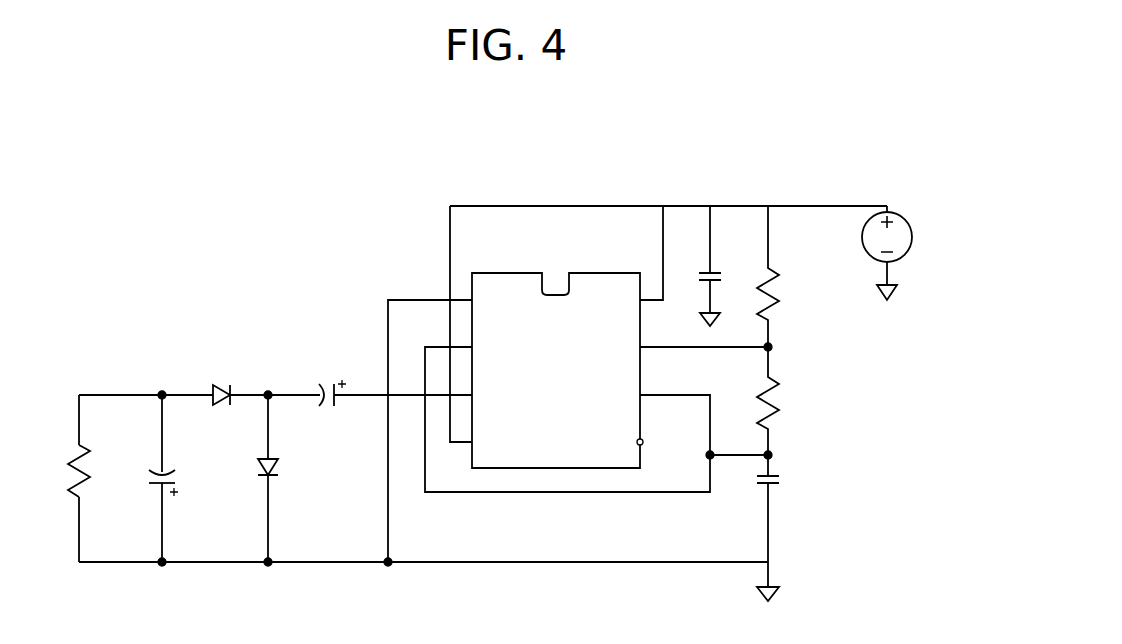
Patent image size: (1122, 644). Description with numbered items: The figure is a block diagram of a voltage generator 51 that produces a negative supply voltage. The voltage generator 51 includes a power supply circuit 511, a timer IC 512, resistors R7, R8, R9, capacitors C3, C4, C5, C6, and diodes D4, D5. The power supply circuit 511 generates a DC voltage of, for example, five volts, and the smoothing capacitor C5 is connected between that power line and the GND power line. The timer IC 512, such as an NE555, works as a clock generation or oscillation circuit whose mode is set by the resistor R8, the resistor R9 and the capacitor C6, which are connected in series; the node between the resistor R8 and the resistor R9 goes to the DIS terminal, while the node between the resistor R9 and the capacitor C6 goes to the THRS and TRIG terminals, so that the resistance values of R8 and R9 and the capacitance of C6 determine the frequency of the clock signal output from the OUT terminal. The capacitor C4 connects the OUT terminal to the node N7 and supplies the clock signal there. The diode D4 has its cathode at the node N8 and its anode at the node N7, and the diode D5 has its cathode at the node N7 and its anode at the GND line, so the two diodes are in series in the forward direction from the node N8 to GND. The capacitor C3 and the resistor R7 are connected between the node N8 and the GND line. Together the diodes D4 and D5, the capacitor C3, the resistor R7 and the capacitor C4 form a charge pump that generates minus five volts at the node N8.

The voltage generator 51 is at (394, 206).
The power supply circuit 511 is at (905, 218).
The timer IC 512 is at (594, 273).
The resistor R7 is at (70, 469).
The resistor R8 is at (778, 300).
The resistor R9 is at (777, 404).
The capacitor C3 is at (165, 474).
The capacitor C4 is at (326, 385).
The capacitor C5 is at (712, 272).
The capacitor C6 is at (778, 478).
The diode D4 is at (218, 388).
The diode D5 is at (278, 466).
The node N7 is at (270, 390).
The node N8 is at (162, 390).